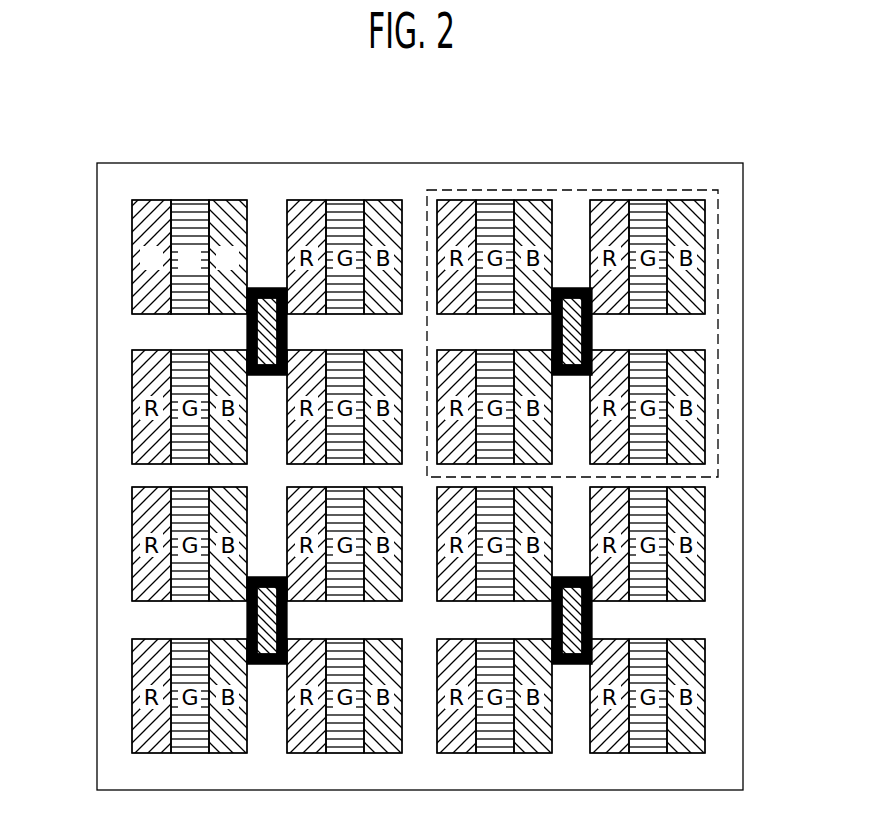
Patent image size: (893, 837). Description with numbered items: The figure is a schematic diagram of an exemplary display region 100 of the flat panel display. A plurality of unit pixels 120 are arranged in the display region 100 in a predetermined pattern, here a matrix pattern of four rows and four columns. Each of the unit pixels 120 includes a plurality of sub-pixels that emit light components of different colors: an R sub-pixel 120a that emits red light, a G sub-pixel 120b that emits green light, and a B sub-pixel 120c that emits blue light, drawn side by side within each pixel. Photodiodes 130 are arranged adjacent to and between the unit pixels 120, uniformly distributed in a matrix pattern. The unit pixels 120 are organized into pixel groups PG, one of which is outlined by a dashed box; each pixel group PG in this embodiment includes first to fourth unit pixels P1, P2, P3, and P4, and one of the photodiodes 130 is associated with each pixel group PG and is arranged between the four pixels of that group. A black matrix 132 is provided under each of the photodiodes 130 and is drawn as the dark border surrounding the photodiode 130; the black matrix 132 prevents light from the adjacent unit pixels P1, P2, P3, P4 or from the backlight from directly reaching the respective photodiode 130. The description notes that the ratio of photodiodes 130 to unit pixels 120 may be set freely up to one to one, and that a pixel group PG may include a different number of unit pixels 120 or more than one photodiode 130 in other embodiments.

The display region 100 is at (588, 163).
The unit pixel 120 is at (209, 193).
The R sub-pixel 120a is at (150, 205).
The G sub-pixel 120b is at (189, 205).
The B sub-pixel 120c is at (246, 213).
The photodiode 130 is at (162, 343).
The black matrix 132 is at (248, 332).
The first unit pixel P1 is at (495, 200).
The second unit pixel P2 is at (645, 200).
The third unit pixel P3 is at (496, 350).
The fourth unit pixel P4 is at (649, 350).
The pixel group PG is at (607, 301).